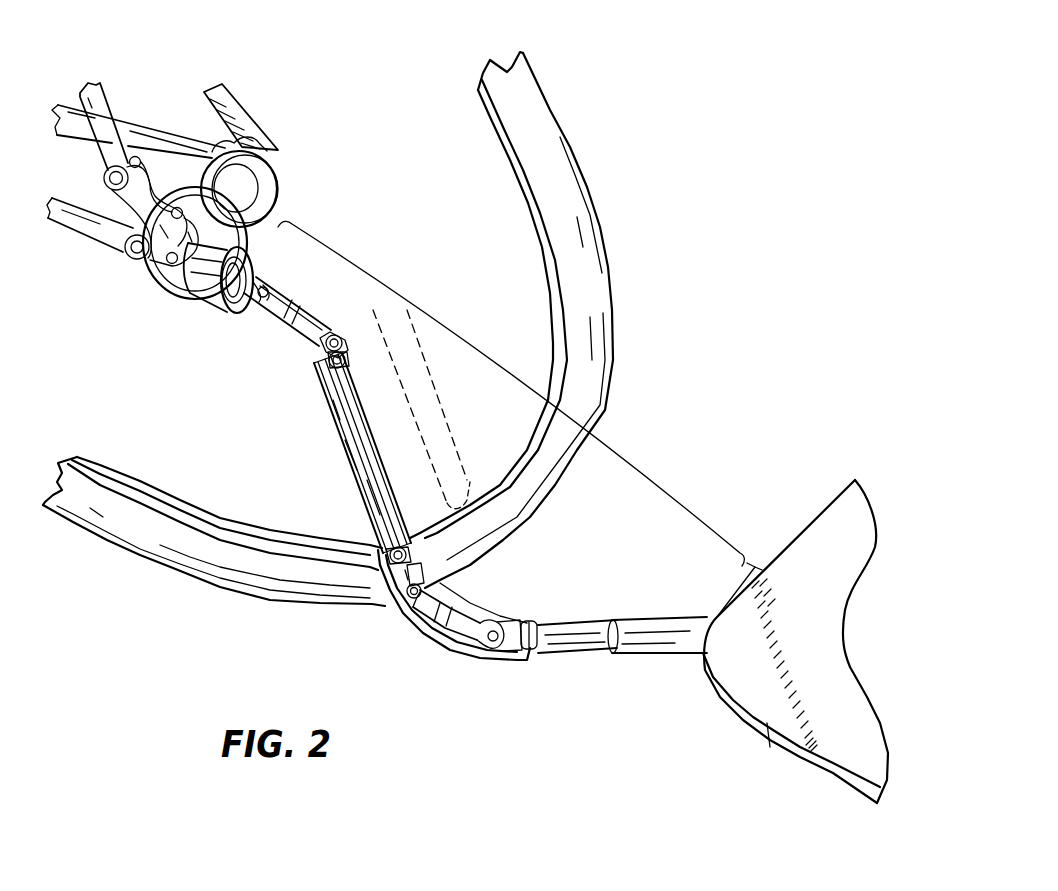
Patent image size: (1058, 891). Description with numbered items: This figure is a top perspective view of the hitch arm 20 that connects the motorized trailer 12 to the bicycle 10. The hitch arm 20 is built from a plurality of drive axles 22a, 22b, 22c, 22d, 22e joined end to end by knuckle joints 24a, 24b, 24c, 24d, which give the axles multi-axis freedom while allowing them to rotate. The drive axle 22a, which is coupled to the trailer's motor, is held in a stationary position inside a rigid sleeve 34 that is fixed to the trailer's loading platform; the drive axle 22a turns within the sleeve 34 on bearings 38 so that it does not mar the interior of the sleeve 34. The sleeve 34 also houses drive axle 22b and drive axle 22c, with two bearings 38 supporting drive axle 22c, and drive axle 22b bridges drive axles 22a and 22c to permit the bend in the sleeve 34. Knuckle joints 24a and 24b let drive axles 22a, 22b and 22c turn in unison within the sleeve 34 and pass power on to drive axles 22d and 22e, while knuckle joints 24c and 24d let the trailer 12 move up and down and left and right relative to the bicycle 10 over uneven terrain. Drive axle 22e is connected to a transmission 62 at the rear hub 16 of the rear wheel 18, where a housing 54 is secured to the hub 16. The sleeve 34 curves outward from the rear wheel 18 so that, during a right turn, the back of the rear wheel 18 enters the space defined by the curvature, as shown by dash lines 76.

The bicycle 10 is at (112, 593).
The trailer 12 is at (705, 752).
The rear hub 16 is at (232, 198).
The rear wheel 18 is at (618, 166).
The hitch arm 20 is at (494, 364).
The drive axle 22a is at (585, 617).
The drive axle 22b is at (463, 606).
The drive axle 22c is at (360, 433).
The drive axle 22d is at (283, 323).
The drive axle 22e is at (248, 290).
The knuckle joint 24a is at (504, 664).
The knuckle joint 24b is at (403, 628).
The knuckle joint 24c is at (345, 350).
The knuckle joint 24d is at (288, 318).
The sleeve 34 is at (643, 627).
The bearings 38 is at (349, 373).
The housing 54 is at (188, 212).
The transmission 62 is at (237, 300).
The dash lines 76 is at (453, 440).